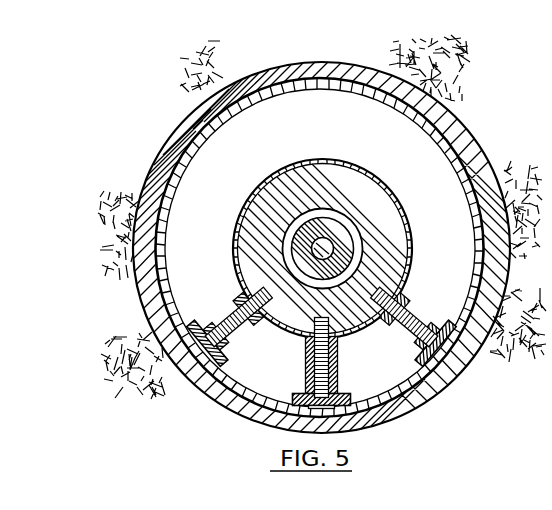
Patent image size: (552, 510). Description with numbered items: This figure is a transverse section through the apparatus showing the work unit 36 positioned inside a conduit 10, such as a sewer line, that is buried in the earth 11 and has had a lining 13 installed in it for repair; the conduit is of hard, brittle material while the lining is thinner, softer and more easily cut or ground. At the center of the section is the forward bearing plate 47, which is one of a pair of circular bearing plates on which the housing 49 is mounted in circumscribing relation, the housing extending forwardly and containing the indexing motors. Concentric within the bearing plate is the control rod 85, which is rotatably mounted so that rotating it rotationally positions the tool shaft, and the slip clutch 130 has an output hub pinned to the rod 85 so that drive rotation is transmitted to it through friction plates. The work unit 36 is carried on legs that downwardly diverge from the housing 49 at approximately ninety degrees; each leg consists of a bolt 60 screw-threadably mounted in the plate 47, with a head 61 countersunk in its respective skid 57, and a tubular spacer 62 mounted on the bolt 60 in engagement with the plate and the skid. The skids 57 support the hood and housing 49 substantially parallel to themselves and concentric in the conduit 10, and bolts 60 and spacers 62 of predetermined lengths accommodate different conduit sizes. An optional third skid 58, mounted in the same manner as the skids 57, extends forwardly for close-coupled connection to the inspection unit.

The conduit 10 is at (470, 132).
The earth 11 is at (312, 38).
The lining 13 is at (477, 206).
The work unit 36 is at (250, 160).
The forward bearing plate 47 is at (337, 178).
The housing 49 is at (256, 186).
The skid 57 is at (203, 333).
The third skid 58 is at (345, 393).
The bolt 60 is at (244, 306).
The head 61 is at (228, 348).
The tubular spacer 62 is at (306, 347).
The control rod 85 is at (306, 240).
The slip clutch 130 is at (323, 217).